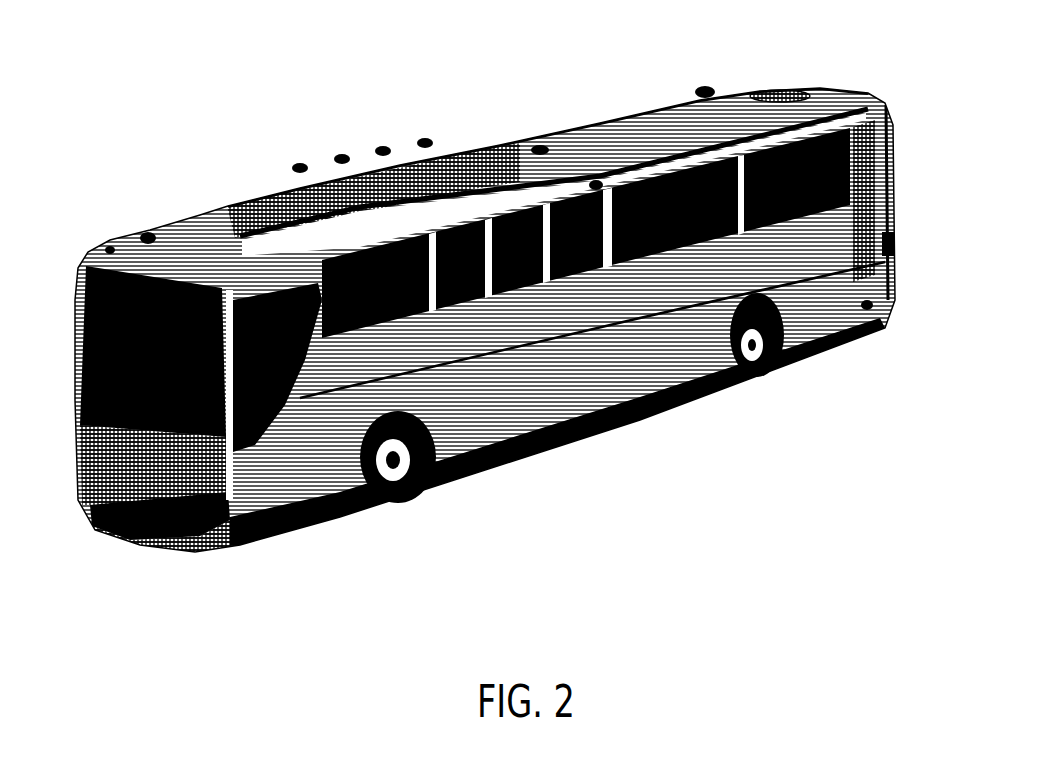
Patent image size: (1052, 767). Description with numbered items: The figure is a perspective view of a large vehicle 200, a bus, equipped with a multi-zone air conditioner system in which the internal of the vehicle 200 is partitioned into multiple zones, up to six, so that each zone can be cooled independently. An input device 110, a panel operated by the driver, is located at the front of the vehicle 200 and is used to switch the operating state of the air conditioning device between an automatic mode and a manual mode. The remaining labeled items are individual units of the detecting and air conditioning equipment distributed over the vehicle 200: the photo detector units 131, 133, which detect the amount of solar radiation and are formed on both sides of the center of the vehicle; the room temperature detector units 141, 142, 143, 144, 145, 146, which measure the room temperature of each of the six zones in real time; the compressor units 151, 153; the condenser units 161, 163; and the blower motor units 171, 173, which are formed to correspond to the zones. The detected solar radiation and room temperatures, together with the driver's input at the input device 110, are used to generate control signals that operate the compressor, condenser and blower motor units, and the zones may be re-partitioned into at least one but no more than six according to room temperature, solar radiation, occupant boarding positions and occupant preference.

The vehicle 200 is at (496, 321).
The input device 110 is at (197, 548).
The front wheel 131 is at (387, 503).
The side sensor 133 is at (523, 427).
The front camera 141 is at (148, 232).
The front lidar sensor 142 is at (275, 525).
The roof camera 143 is at (506, 143).
The roof camera 144 is at (596, 180).
The rear roof camera 145 is at (694, 97).
The rear roof sensor dome 146 is at (812, 92).
The rear lidar sensor 151 is at (867, 310).
The rear camera 153 is at (894, 247).
The GPS antenna 161 is at (417, 155).
The GPS antenna 163 is at (277, 183).
The communication antenna 171 is at (466, 160).
The communication antenna 173 is at (325, 170).